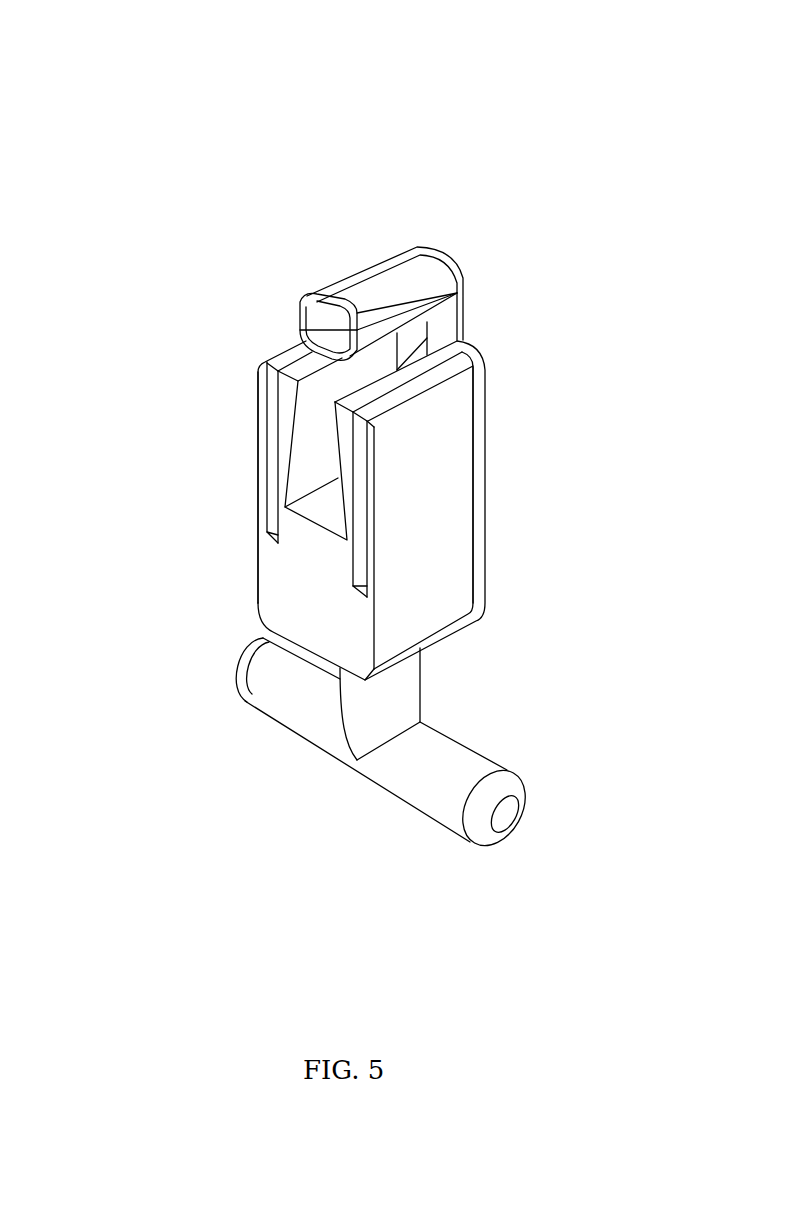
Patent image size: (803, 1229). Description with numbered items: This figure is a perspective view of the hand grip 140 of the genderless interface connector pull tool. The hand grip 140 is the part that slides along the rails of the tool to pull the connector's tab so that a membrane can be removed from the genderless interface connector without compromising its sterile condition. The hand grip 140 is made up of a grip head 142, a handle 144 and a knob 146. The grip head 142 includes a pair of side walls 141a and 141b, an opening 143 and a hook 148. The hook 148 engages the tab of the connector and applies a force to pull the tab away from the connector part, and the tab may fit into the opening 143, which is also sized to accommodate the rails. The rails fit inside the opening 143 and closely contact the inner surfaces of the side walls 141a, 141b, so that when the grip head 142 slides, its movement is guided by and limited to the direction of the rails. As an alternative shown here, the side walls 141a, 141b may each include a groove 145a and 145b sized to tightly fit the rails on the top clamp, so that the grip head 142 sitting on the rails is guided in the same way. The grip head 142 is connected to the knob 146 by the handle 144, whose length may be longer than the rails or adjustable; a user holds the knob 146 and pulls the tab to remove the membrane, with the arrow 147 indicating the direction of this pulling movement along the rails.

The hand grip 140 is at (137, 116).
The side wall 141a is at (257, 399).
The side wall 141b is at (445, 537).
The grip head 142 is at (480, 413).
The opening 143 is at (312, 460).
The handle 144 is at (388, 688).
The groove 145a is at (272, 422).
The groove 145b is at (362, 540).
The knob 146 is at (377, 772).
The insertion direction 147 is at (488, 454).
The hook 148 is at (401, 275).